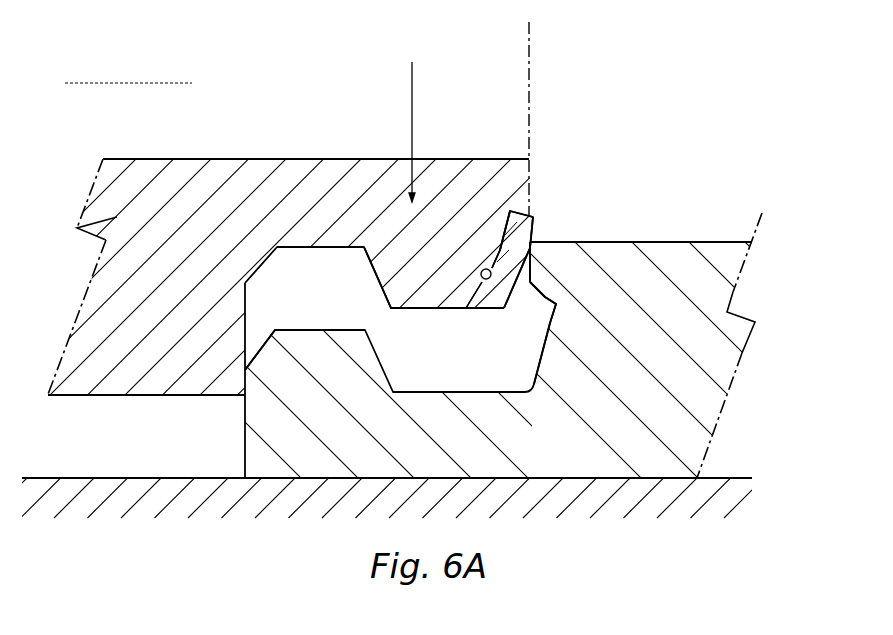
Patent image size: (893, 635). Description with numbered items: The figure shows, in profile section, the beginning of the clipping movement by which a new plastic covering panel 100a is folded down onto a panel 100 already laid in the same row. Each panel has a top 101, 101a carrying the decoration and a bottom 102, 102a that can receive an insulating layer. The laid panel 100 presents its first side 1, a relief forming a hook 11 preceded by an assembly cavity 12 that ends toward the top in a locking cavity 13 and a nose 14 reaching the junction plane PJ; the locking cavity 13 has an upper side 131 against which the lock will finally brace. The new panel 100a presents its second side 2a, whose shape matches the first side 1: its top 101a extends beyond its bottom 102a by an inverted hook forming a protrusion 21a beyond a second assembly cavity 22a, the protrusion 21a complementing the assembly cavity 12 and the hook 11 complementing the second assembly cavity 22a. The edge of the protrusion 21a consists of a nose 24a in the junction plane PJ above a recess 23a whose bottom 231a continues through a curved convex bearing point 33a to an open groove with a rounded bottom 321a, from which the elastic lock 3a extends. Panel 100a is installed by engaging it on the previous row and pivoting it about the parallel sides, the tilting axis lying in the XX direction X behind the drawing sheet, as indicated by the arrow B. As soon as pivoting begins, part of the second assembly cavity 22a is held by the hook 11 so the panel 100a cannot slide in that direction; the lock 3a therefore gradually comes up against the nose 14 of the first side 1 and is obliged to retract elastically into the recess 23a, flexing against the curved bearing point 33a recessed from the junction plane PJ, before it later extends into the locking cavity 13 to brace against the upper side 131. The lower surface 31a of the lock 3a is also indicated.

The first side 1 is at (232, 429).
The second side 2a is at (389, 110).
The lock 3a is at (538, 215).
The hook 11 is at (331, 387).
The assembly cavity 12 is at (468, 385).
The locking cavity 13 is at (528, 320).
The nose 14 is at (532, 267).
The upper side 131 is at (548, 297).
The protrusion 21a is at (489, 250).
The second assembly cavity 22a is at (328, 288).
The recess 23a is at (522, 207).
The bottom of recess 231a is at (491, 203).
The nose 24a is at (515, 200).
The lip lower surface 31a is at (508, 290).
The bottom 321a is at (481, 279).
The curved bearing point 33a is at (486, 245).
The panel 100 is at (673, 297).
The top 101 is at (723, 240).
The bottom 102 is at (633, 481).
The panel 100a is at (181, 217).
The top 101a is at (192, 158).
The bottom 102a is at (103, 395).
The arrow B is at (403, 131).
The junction plane PJ is at (543, 117).
The XX direction X is at (129, 70).